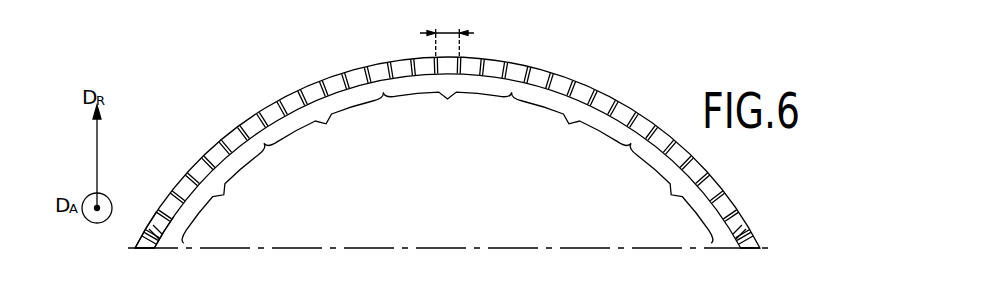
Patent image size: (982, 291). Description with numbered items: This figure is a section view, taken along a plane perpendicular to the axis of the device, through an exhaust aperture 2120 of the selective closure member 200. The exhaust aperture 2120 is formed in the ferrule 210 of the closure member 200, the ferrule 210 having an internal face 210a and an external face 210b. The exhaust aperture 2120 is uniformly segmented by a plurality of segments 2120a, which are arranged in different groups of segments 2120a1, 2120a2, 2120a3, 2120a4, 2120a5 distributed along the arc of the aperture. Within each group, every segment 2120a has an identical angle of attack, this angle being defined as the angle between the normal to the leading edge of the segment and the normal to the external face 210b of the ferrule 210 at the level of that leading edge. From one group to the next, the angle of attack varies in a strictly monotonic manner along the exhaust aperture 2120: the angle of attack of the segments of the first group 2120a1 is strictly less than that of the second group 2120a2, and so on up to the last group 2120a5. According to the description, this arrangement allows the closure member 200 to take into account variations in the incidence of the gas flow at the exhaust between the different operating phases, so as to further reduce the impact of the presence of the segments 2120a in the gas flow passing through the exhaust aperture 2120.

The selective closure member 200 is at (427, 144).
The exhaust aperture 2120 is at (427, 155).
The segment 2120a is at (276, 104).
The first group of segments 2120a1 is at (246, 193).
The second group of segments 2120a2 is at (326, 124).
The third group of segments 2120a3 is at (447, 111).
The fourth group of segments 2120a4 is at (571, 124).
The fifth group of segments 2120a5 is at (648, 193).
The ferrule 210 is at (427, 251).
The internal face of the ferrule 210a is at (191, 247).
The external face of the ferrule 210b is at (143, 209).